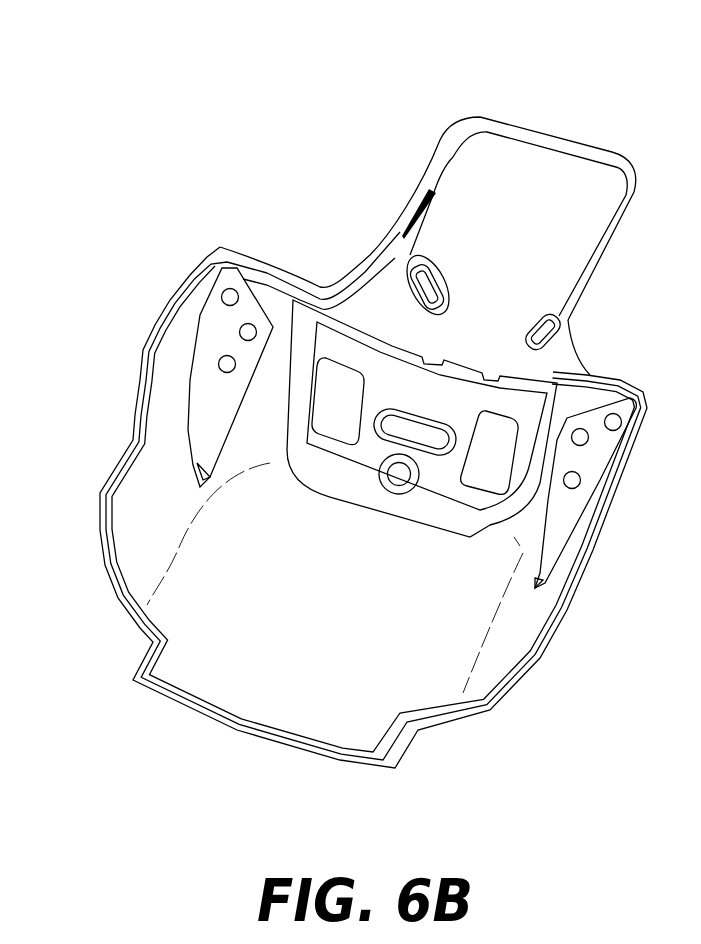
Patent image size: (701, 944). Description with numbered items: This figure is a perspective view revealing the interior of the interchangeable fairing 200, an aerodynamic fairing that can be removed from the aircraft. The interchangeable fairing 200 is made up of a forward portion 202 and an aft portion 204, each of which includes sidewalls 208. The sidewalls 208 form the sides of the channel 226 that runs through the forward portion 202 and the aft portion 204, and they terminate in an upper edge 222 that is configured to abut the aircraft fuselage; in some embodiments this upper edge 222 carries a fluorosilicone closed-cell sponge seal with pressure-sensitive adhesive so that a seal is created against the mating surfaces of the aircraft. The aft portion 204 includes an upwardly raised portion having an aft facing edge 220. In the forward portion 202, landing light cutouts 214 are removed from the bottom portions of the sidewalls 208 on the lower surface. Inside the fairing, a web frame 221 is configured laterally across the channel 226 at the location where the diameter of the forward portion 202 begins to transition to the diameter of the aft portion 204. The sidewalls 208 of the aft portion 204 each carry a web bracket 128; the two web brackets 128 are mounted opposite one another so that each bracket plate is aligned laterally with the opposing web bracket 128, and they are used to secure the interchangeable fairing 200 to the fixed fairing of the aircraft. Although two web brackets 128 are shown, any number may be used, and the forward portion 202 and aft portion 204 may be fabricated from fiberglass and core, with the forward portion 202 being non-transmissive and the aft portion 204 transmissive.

The interchangeable fairing 200 is at (319, 150).
The forward portion 202 is at (560, 112).
The aft portion 204 is at (580, 640).
The web bracket 128 is at (213, 313).
The landing light cutouts 214 is at (420, 272).
The aft facing edge 220 is at (170, 347).
The web frame 221 is at (408, 423).
The upper edge 222 is at (420, 187).
The channel 226 is at (240, 726).
The sidewalls 208 is at (143, 512).